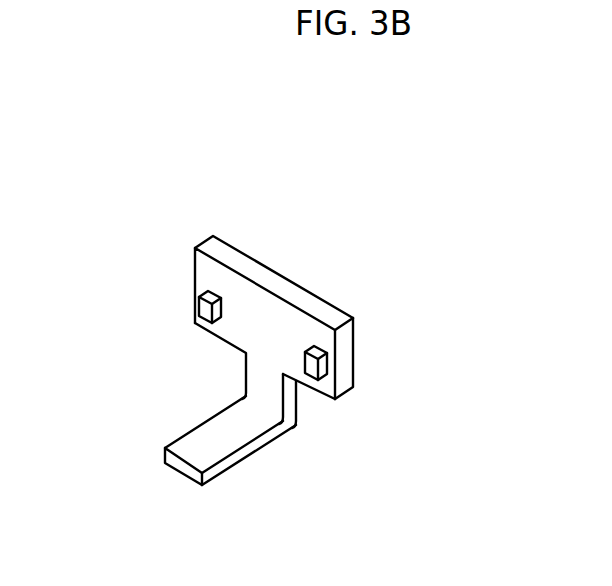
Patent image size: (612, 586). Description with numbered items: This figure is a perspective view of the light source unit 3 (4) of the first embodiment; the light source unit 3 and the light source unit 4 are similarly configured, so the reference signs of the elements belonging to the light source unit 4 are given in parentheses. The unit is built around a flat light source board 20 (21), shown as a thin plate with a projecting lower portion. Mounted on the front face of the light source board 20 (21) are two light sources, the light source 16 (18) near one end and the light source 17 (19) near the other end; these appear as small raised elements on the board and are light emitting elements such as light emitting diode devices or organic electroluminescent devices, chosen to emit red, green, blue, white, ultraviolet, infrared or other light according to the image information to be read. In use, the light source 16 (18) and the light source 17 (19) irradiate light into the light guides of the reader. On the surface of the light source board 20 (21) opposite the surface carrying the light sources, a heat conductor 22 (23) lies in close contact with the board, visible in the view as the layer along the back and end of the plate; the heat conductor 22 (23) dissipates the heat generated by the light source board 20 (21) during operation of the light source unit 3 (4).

The light source unit 3 is at (182, 133).
The light source unit 4 is at (200, 201).
The light source board 20 is at (258, 312).
The light source board 21 is at (339, 312).
The light source 16 is at (195, 305).
The light source 18 is at (126, 332).
The light source 17 is at (303, 382).
The light source 19 is at (307, 453).
The heat conductor 22 is at (355, 348).
The heat conductor 23 is at (409, 365).